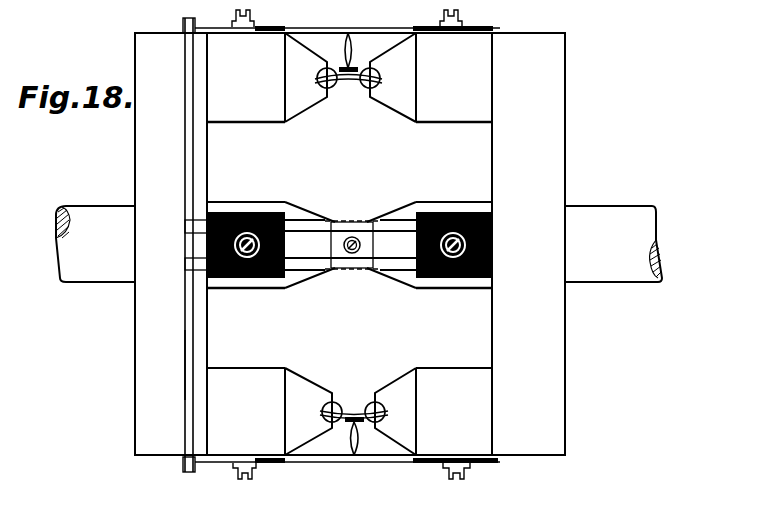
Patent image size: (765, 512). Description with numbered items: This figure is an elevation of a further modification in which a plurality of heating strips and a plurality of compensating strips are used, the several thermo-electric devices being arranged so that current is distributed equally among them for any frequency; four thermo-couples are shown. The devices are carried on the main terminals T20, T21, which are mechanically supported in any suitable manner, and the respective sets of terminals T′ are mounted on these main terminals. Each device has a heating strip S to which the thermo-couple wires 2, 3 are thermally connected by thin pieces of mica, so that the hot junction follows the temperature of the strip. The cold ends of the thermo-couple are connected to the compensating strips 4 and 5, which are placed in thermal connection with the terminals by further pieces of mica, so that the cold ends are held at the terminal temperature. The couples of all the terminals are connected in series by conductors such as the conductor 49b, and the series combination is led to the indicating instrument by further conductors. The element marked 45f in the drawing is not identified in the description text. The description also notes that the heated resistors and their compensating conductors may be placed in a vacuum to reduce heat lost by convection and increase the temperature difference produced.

The thermo-couple wire 2 is at (342, 46).
The thermo-couple wire 3 is at (356, 46).
The compensating strip 4 is at (330, 461).
The compensating strip 5 is at (372, 29).
The heating strip S is at (350, 404).
The terminal T′ is at (349, 244).
The main terminal T20 is at (610, 221).
The main terminal T21 is at (108, 218).
The rail 45f is at (187, 150).
The conductor 49b is at (188, 362).